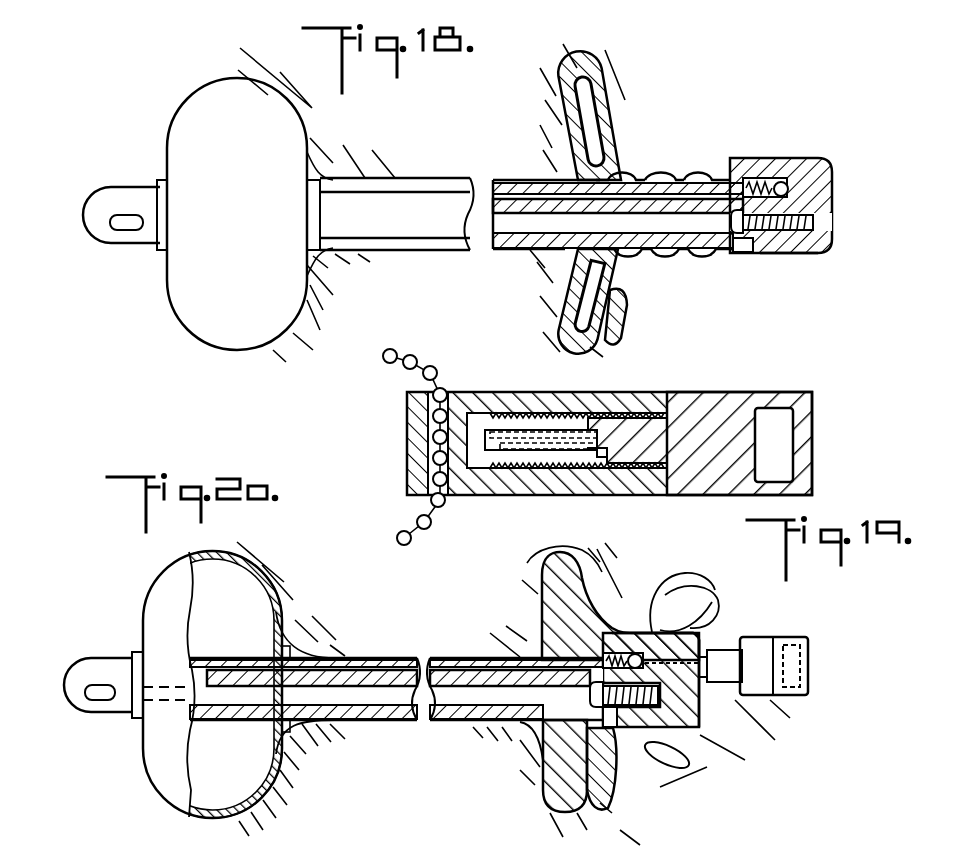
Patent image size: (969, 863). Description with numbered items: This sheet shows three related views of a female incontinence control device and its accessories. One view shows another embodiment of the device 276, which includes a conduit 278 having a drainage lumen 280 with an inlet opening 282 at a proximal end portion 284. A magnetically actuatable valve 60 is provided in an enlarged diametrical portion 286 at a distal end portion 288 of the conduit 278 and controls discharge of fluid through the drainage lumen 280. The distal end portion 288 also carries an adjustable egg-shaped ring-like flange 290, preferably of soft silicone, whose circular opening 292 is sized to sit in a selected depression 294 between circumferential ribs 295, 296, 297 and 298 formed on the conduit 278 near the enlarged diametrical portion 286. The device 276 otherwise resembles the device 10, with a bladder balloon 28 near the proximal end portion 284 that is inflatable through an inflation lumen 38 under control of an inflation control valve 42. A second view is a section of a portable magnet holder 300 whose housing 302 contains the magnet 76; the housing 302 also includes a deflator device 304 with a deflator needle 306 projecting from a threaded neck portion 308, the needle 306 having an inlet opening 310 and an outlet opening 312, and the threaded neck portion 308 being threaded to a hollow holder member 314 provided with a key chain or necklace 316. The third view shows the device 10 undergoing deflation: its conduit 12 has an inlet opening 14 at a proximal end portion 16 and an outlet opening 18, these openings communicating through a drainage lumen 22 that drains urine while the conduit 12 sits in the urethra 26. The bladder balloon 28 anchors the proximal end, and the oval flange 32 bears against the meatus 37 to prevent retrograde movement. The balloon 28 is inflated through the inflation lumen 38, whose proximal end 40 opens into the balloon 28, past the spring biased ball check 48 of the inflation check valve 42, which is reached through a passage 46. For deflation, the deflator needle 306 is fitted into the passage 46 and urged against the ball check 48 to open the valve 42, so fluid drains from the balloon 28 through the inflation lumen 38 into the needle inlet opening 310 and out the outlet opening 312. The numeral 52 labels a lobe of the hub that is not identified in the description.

In FIG. 20, the device 10 is at (366, 603).
In FIG. 20, the conduit 12 is at (455, 657).
In FIG. 20, the inlet opening 14 is at (97, 702).
In FIG. 20, the proximal end portion 16 is at (93, 658).
In FIG. 18, the outlet opening 18 is at (745, 256).
In FIG. 20, the outlet opening 18 is at (610, 730).
In FIG. 20, the lumen 22 is at (353, 697).
In FIG. 18, the urethra 26 is at (420, 178).
In FIG. 20, the urethra 26 is at (401, 658).
In FIG. 18, the bladder balloon 28 is at (208, 90).
In FIG. 20, the bladder balloon 28 is at (151, 592).
In FIG. 20, the flange 32 is at (550, 557).
In FIG. 20, the meatus 37 is at (545, 812).
In FIG. 20, the inflation lumen 38 is at (348, 667).
In FIG. 20, the proximal end 40 is at (213, 658).
In FIG. 18, the inflation check valve 42 is at (756, 175).
In FIG. 20, the inflation check valve 42 is at (625, 650).
In FIG. 20, the passage 46 is at (735, 652).
In FIG. 20, the spring biased ball check 48 is at (657, 630).
In FIG. 20, the lobe 52 is at (610, 812).
In FIG. 18, the magnetically actuatable valve 60 is at (780, 256).
In FIG. 20, the magnetically actuatable valve 60 is at (636, 716).
In FIG. 19, the magnet 76 is at (812, 399).
In FIG. 20, the magnet 76 is at (795, 650).
In FIG. 18, the female incontinence control device 276 is at (524, 64).
In FIG. 18, the conduit 278 is at (526, 181).
In FIG. 18, the drainage lumen 280 is at (503, 250).
In FIG. 18, the inlet opening 282 is at (122, 233).
In FIG. 18, the proximal end portion 284 is at (118, 185).
In FIG. 18, the enlarged diametrical portion 286 is at (812, 254).
In FIG. 18, the distal end portion 288 is at (810, 160).
In FIG. 18, the adjustable egg-shaped ring-like flange 290 is at (613, 128).
In FIG. 18, the circular opening 292 is at (625, 258).
In FIG. 18, the depression 294 is at (678, 253).
In FIG. 18, the circumferential rib 295 is at (697, 176).
In FIG. 18, the circumferential rib 296 is at (659, 176).
In FIG. 18, the circumferential rib 297 is at (626, 176).
In FIG. 18, the circumferential rib 298 is at (560, 290).
In FIG. 19, the portable magnet holder 300 is at (718, 380).
In FIG. 19, the housing 302 is at (757, 398).
In FIG. 20, the housing 302 is at (757, 645).
In FIG. 19, the deflator device 304 is at (550, 454).
In FIG. 19, the deflator needle 306 is at (527, 430).
In FIG. 20, the deflator needle 306 is at (682, 638).
In FIG. 19, the threaded neck portion 308 is at (649, 419).
In FIG. 20, the threaded neck portion 308 is at (735, 688).
In FIG. 19, the inlet opening 310 is at (489, 452).
In FIG. 19, the outlet opening 312 is at (600, 460).
In FIG. 20, the outlet opening 312 is at (701, 699).
In FIG. 19, the hollow holder member 314 is at (478, 398).
In FIG. 19, the key chain or necklace 316 is at (410, 518).